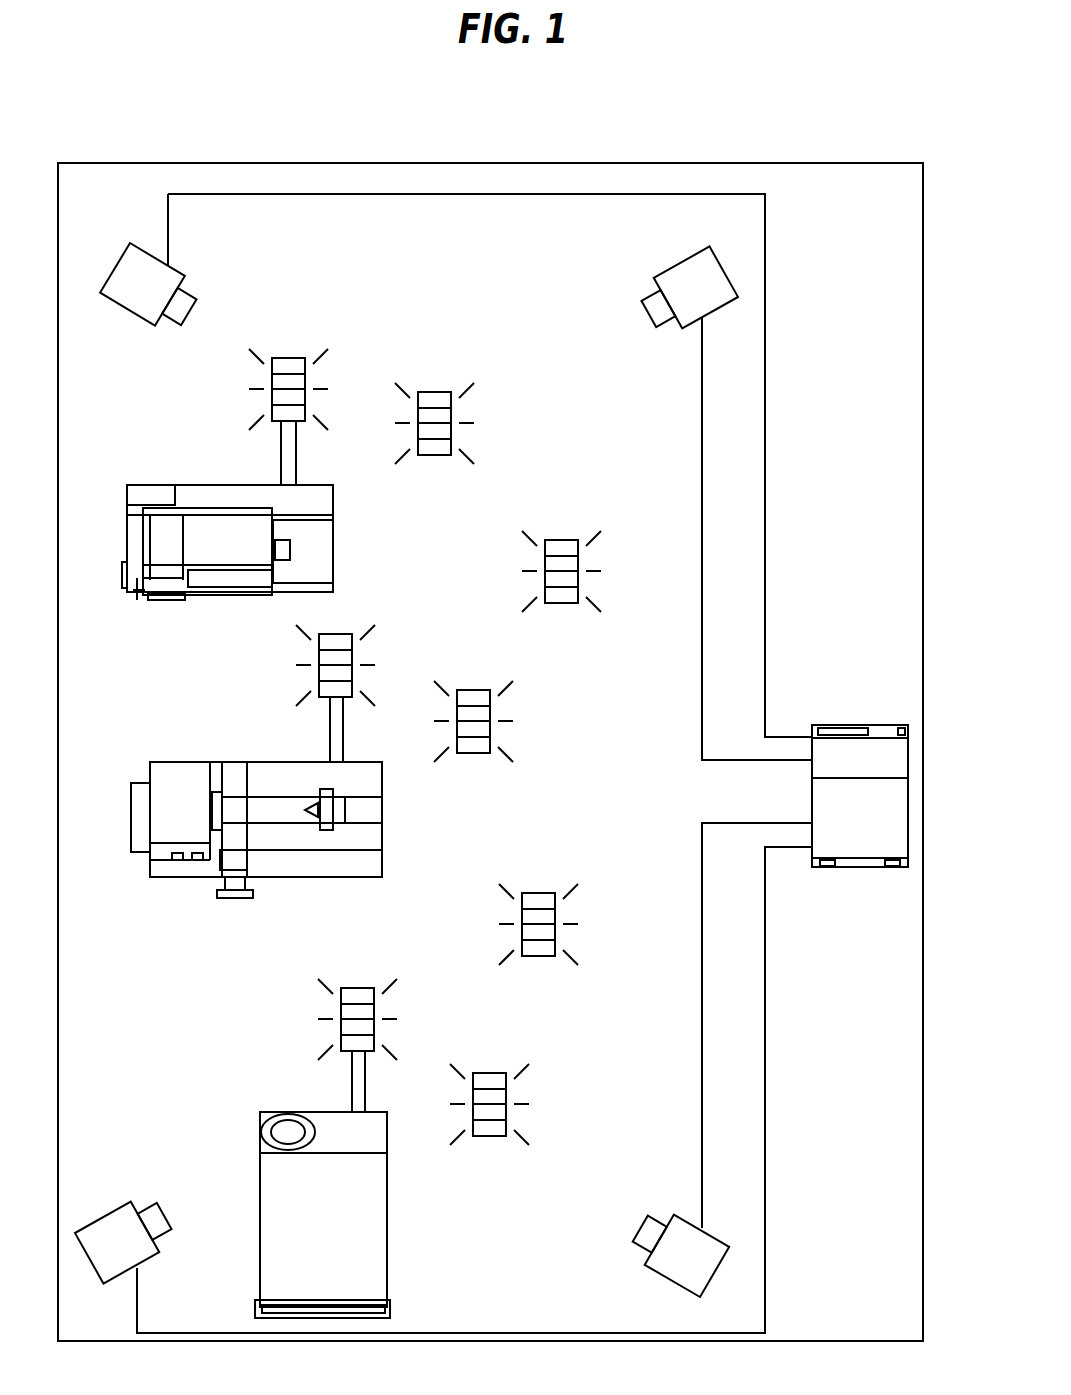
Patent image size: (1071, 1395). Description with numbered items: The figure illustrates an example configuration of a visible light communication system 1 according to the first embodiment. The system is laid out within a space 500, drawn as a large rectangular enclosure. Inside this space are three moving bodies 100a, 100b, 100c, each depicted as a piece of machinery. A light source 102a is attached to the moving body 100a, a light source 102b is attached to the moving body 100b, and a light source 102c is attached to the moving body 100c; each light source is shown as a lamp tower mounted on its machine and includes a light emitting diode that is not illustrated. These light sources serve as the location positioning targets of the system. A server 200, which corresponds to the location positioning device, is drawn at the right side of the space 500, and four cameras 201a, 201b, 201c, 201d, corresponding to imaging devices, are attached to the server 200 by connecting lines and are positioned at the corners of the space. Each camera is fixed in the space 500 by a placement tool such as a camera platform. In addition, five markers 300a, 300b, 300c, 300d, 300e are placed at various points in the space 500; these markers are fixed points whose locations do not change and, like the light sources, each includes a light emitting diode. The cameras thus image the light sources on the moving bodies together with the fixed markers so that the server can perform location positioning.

The visible light communication system 1 is at (785, 281).
The space 500 is at (958, 250).
The moving body 100a is at (152, 485).
The moving body 100b is at (193, 762).
The moving body 100c is at (260, 1113).
The light source 102a is at (272, 397).
The light source 102b is at (319, 668).
The light source 102c is at (341, 1030).
The server 200 is at (845, 725).
The camera 201a is at (700, 250).
The camera 201b is at (678, 1212).
The camera 201c is at (130, 1202).
The camera 201d is at (150, 246).
The marker 300a is at (430, 392).
The marker 300b is at (568, 540).
The marker 300c is at (466, 690).
The marker 300d is at (534, 893).
The marker 300e is at (490, 1073).